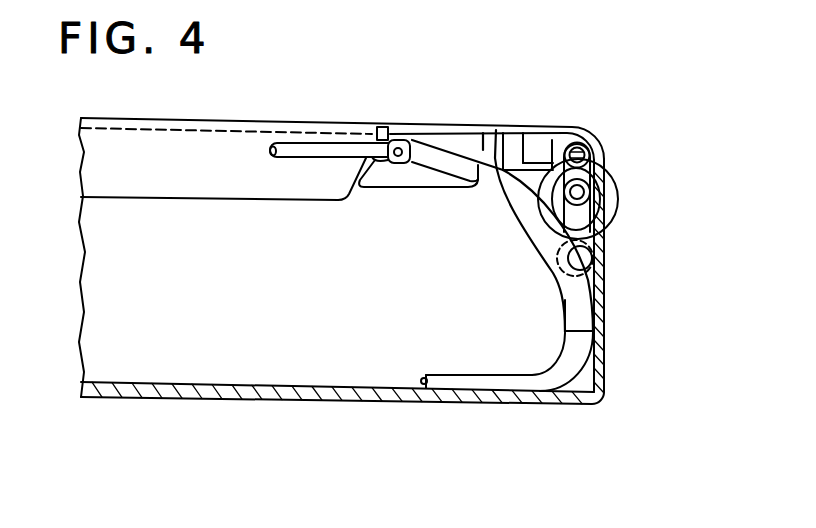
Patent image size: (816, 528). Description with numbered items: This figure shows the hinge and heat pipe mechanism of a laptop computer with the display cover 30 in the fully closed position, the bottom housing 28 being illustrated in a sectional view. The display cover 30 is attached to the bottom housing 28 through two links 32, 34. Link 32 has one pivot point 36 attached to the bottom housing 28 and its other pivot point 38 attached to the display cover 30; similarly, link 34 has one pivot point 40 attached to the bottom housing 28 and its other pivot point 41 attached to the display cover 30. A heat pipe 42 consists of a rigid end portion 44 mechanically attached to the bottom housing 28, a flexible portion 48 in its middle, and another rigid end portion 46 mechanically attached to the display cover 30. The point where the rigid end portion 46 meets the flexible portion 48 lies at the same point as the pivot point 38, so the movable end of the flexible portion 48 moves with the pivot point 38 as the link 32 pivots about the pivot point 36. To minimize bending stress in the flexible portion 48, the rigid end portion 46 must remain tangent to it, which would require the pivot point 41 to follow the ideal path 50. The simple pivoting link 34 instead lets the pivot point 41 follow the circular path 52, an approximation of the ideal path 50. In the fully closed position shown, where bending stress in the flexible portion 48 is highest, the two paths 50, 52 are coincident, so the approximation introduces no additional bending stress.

The bottom housing 28 is at (367, 403).
The display cover 30 is at (288, 122).
The link 32 is at (610, 225).
The link 34 is at (600, 172).
The pivot point 36 is at (598, 273).
The pivot point 38 is at (406, 140).
The pivot point 40 is at (605, 197).
The pivot point 41 is at (590, 140).
The heat pipe 42 is at (514, 214).
The rigid end portion 44 is at (496, 385).
The rigid end portion 46 is at (325, 158).
The flexible portion 48 is at (563, 306).
The ideal path 50 is at (553, 140).
The circular path 52 is at (523, 130).